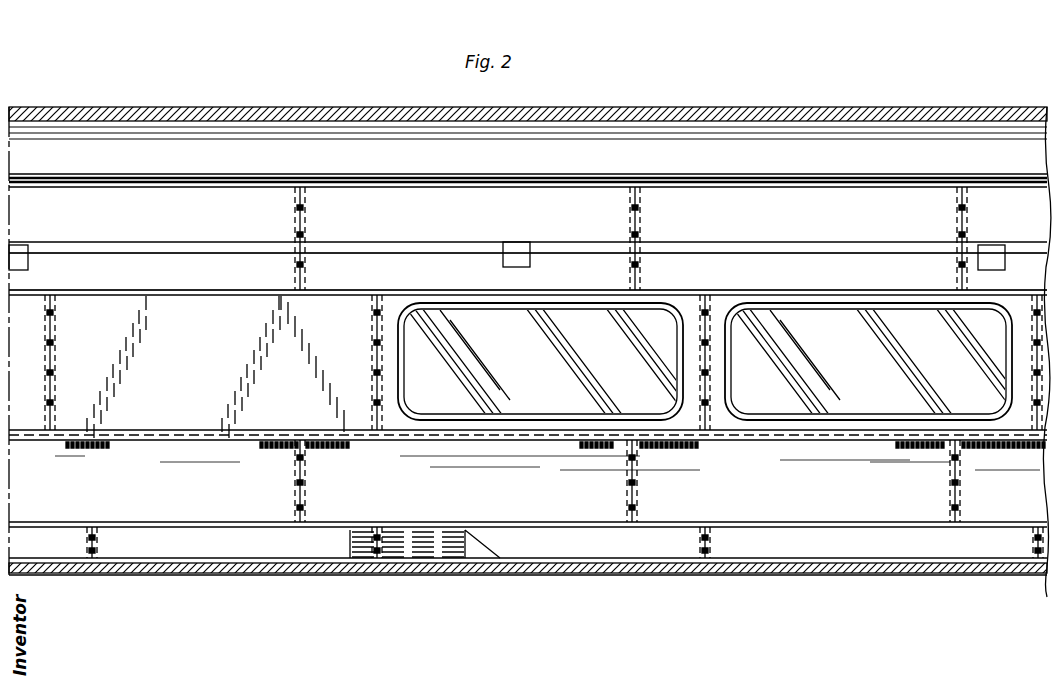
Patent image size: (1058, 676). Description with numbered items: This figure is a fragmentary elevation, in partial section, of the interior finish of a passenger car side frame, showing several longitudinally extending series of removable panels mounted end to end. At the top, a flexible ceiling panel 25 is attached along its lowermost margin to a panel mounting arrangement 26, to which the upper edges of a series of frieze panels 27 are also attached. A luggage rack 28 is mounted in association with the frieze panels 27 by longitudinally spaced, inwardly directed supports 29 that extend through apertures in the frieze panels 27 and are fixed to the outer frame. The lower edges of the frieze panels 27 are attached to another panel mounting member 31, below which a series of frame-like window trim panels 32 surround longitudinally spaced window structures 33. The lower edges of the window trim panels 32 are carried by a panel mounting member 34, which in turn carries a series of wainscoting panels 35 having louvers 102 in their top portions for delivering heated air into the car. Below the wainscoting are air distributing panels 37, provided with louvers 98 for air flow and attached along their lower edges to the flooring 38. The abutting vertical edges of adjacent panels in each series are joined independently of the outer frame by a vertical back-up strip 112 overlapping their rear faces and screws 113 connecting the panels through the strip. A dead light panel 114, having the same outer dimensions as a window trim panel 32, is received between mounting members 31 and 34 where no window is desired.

The flexible ceiling panel 25 is at (622, 108).
The panel mounting arrangement 26 is at (490, 173).
The frieze panels 27 is at (180, 221).
The luggage rack 28 is at (555, 240).
The supports 29 is at (22, 245).
The panel mounting member 31 is at (668, 285).
The window trim panels 32 is at (392, 340).
The window structures 33 is at (556, 368).
The panel mounting member 34 is at (805, 425).
The wainscoting panels 35 is at (198, 491).
The air distributing panels 37 is at (52, 535).
The flooring 38 is at (277, 563).
The louvers 98 is at (350, 552).
The louvers 102 is at (105, 450).
The back-up strip 112 is at (306, 208).
The screws 113 is at (295, 233).
The dead light panel 114 is at (222, 361).